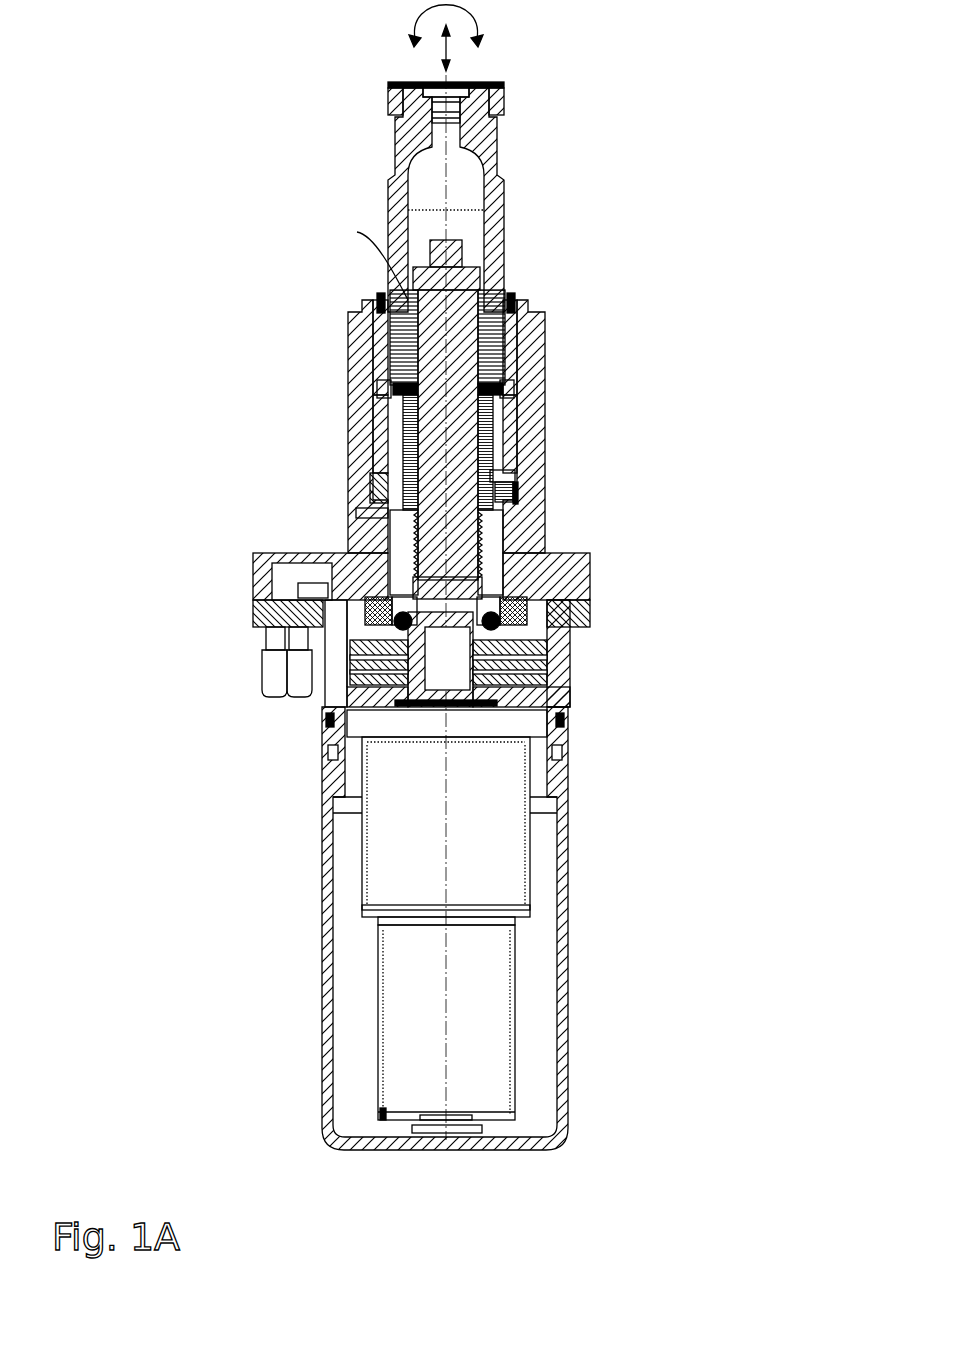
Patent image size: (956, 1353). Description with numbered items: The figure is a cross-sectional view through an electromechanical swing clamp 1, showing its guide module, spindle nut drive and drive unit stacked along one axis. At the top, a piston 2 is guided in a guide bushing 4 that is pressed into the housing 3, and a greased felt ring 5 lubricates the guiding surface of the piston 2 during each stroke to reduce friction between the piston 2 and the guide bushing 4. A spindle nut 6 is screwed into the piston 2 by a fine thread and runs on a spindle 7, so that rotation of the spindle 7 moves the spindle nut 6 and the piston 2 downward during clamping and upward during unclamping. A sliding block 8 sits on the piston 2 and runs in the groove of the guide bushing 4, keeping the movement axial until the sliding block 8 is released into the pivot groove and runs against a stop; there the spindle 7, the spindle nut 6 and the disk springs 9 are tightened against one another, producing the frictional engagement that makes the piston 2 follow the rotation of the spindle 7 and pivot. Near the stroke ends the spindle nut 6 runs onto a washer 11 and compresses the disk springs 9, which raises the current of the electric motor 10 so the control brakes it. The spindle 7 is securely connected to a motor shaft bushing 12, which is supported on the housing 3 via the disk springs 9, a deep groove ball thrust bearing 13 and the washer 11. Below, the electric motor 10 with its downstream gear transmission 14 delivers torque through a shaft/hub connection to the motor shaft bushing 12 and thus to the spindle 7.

The swing clamp 1 is at (192, 383).
The piston 2 is at (475, 138).
The housing 3 is at (358, 390).
The guide bushing 4 is at (509, 338).
The felt ring 5 is at (509, 396).
The spindle nut 6 is at (385, 448).
The spindle 7 is at (427, 583).
The sliding block 8 is at (507, 496).
The disk springs 9 is at (347, 680).
The electric motor 10 is at (490, 1048).
The washer 11 is at (545, 585).
The motor shaft bushing 12 is at (387, 687).
The deep groove ball thrust bearing 13 is at (497, 637).
The gear transmission 14 is at (383, 865).